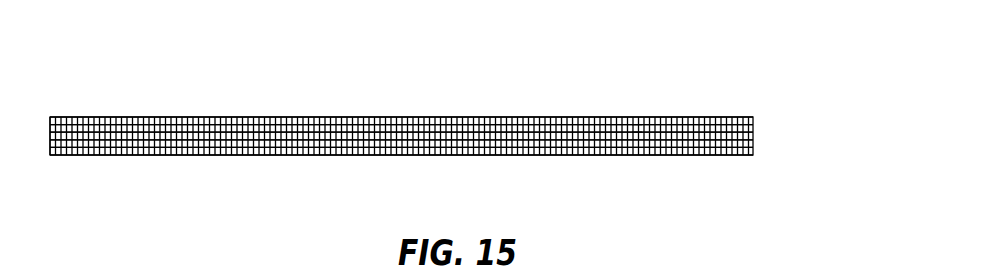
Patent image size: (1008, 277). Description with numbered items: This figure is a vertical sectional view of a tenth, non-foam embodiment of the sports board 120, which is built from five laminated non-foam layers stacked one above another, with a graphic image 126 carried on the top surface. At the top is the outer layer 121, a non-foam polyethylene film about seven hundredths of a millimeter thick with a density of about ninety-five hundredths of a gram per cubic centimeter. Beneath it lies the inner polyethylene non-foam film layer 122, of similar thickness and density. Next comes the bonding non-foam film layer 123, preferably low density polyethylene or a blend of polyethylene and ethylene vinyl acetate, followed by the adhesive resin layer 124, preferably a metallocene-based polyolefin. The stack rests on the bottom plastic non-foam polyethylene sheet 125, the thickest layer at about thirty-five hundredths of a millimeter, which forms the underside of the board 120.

The board 120 is at (166, 79).
The outer layer 121 is at (740, 118).
The inner polyethylene non-foam film layer 122 is at (753, 126).
The bonding non-foam film layer 123 is at (753, 133).
The adhesive resin layer 124 is at (753, 141).
The bottom plastic non-foam polyethylene sheet 125 is at (736, 152).
The graphic image 126 is at (638, 128).